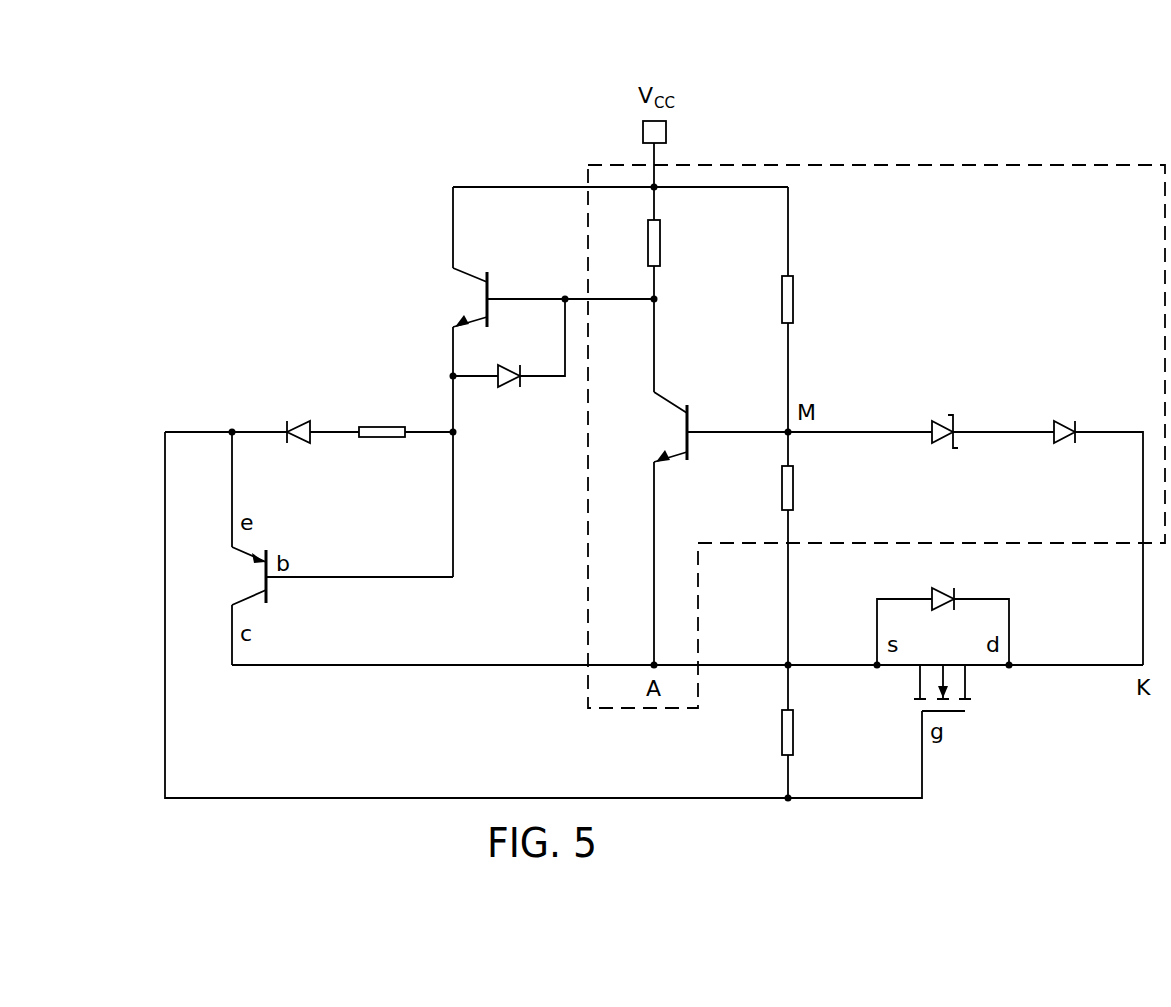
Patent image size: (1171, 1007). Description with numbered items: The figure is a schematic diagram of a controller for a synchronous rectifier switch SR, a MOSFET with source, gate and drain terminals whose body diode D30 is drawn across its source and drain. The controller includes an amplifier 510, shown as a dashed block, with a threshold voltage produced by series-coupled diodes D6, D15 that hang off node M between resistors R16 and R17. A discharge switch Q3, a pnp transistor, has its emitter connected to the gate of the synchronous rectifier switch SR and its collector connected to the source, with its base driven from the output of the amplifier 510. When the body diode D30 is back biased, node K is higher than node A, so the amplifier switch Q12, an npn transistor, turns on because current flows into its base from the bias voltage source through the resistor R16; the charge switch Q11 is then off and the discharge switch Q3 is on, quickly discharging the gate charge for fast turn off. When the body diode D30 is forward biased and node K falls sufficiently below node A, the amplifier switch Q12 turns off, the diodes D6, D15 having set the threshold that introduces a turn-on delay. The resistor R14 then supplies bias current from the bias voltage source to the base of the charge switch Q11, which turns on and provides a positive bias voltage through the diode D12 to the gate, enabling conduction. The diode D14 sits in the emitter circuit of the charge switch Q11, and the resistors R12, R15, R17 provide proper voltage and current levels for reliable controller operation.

The amplifier 510 is at (1037, 273).
The discharge switch Q3 is at (237, 576).
The diode D12 is at (300, 418).
The resistor R12 is at (382, 433).
The charge switch Q11 is at (536, 297).
The diode D14 is at (509, 358).
The resistor R14 is at (633, 243).
The resistor R16 is at (766, 299).
The resistor R17 is at (765, 488).
The resistor R15 is at (765, 732).
The amplifier switch Q12 is at (704, 427).
The diode D15 is at (942, 418).
The diode D6 is at (1065, 418).
The body diode D30 is at (943, 612).
The synchronous rectifier switch SR is at (942, 671).